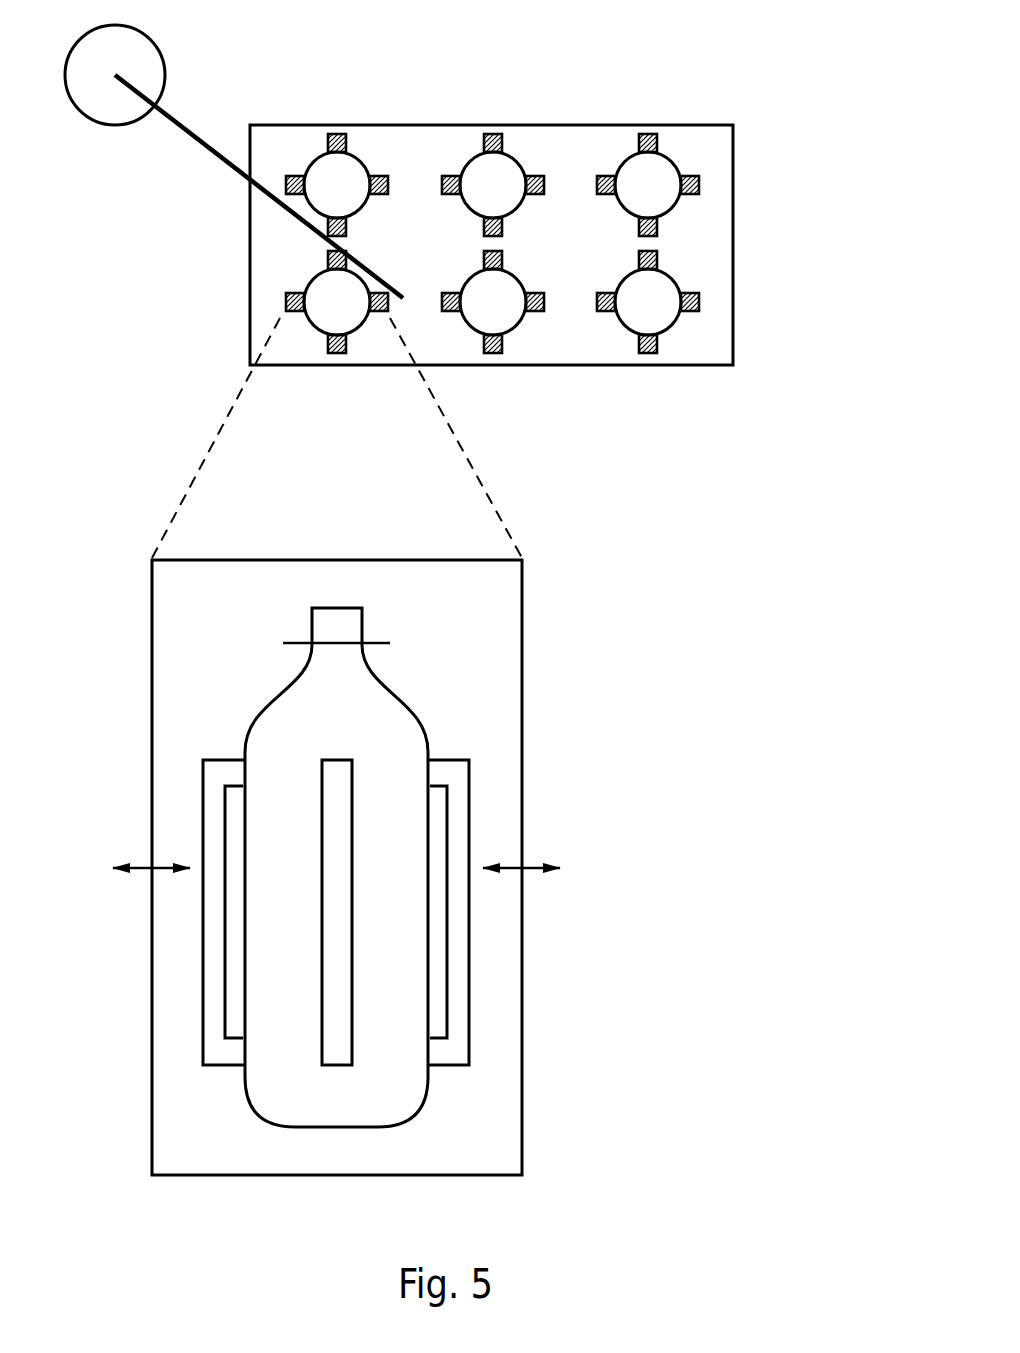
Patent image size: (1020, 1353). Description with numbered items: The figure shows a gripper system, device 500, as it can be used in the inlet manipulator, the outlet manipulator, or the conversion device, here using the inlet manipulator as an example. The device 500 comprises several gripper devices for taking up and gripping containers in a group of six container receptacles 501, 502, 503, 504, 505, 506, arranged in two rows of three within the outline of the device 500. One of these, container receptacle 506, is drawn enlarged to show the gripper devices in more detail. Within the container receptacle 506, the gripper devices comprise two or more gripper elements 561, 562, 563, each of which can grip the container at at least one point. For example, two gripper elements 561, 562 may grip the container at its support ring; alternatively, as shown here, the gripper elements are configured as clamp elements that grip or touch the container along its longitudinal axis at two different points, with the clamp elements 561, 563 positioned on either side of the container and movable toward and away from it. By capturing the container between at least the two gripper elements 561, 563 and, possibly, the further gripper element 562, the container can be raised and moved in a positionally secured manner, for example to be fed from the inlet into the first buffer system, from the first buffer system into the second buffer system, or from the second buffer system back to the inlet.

The device 500 is at (757, 52).
The container receptacle 501 is at (683, 155).
The container receptacle 502 is at (527, 155).
The container receptacle 503 is at (371, 155).
The container receptacle 504 is at (683, 335).
The container receptacle 505 is at (528, 335).
The container receptacle 506 is at (371, 335).
The gripper element 561 is at (225, 1060).
The gripper element 562 is at (342, 1060).
The gripper element 563 is at (465, 1030).